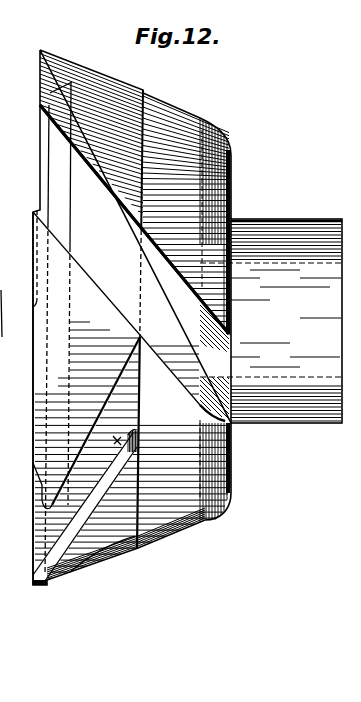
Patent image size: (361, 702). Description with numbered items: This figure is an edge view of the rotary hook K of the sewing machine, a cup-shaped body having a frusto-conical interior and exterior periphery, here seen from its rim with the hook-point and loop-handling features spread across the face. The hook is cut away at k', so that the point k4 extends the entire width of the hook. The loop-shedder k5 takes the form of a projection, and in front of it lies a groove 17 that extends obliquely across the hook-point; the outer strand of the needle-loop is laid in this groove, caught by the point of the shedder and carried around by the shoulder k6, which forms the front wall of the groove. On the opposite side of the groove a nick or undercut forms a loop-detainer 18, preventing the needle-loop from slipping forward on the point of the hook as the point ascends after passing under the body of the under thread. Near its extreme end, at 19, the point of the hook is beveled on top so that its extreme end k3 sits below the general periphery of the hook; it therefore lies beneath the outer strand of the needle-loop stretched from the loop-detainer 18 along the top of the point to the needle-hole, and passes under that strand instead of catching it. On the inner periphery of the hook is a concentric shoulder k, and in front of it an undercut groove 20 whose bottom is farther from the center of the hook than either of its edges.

The undercut groove 20 is at (61, 293).
The concentric shoulder k is at (66, 340).
The extreme end of the hook-point k3 is at (33, 212).
The bevel on the hook-point 19 is at (36, 249).
The cut-away portion of the hook k' is at (91, 183).
The rotary hook K is at (154, 319).
The hook-point k4 is at (96, 421).
The loop-shedder k5 is at (85, 492).
The groove 17 is at (91, 514).
The loop-detainer 18 is at (33, 508).
The shoulder k6 is at (54, 538).